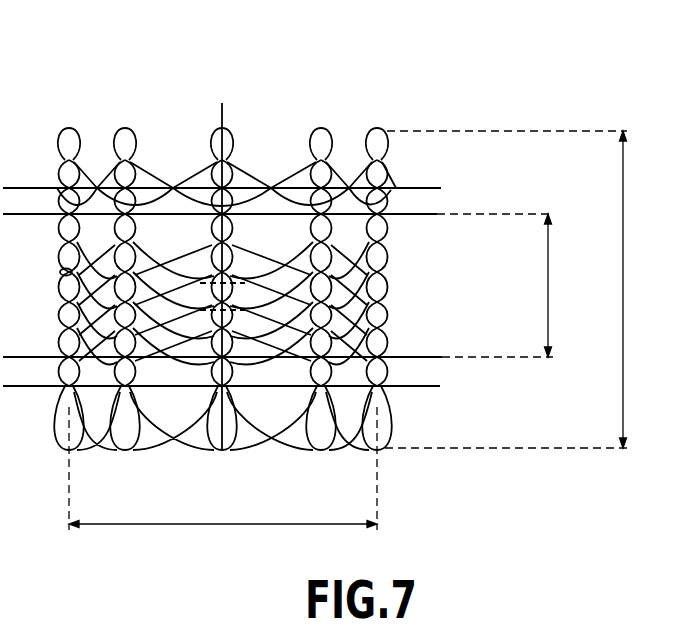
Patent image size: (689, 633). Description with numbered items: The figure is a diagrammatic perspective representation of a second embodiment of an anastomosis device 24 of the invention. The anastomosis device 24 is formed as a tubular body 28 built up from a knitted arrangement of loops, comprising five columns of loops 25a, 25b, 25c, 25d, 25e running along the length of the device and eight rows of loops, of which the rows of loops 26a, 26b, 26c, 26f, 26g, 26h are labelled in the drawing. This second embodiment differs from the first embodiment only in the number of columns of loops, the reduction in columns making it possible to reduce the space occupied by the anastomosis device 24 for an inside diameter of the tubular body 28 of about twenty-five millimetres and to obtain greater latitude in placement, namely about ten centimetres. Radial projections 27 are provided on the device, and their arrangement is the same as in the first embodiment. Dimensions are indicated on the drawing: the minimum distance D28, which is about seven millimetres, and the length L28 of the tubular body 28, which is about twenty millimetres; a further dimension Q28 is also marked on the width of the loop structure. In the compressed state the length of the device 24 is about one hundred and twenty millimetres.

The anastomosis device 24 is at (432, 70).
The column of loops 25a is at (70, 116).
The column of loops 25b is at (125, 116).
The column of loops 25c is at (237, 119).
The column of loops 25d is at (321, 116).
The column of loops 25e is at (379, 116).
The row of loops 26a is at (413, 188).
The row of loops 26b is at (437, 214).
The row of loops 26c is at (384, 293).
The row of loops 26f is at (384, 350).
The row of loops 26g is at (426, 357).
The row of loops 26h is at (438, 385).
The radial projection 27 is at (76, 272).
The tubular body 28 is at (379, 449).
The minimum distance D28 is at (515, 285).
The length of the tubular body L28 is at (524, 289).
The repeat unit width Q28 is at (223, 468).